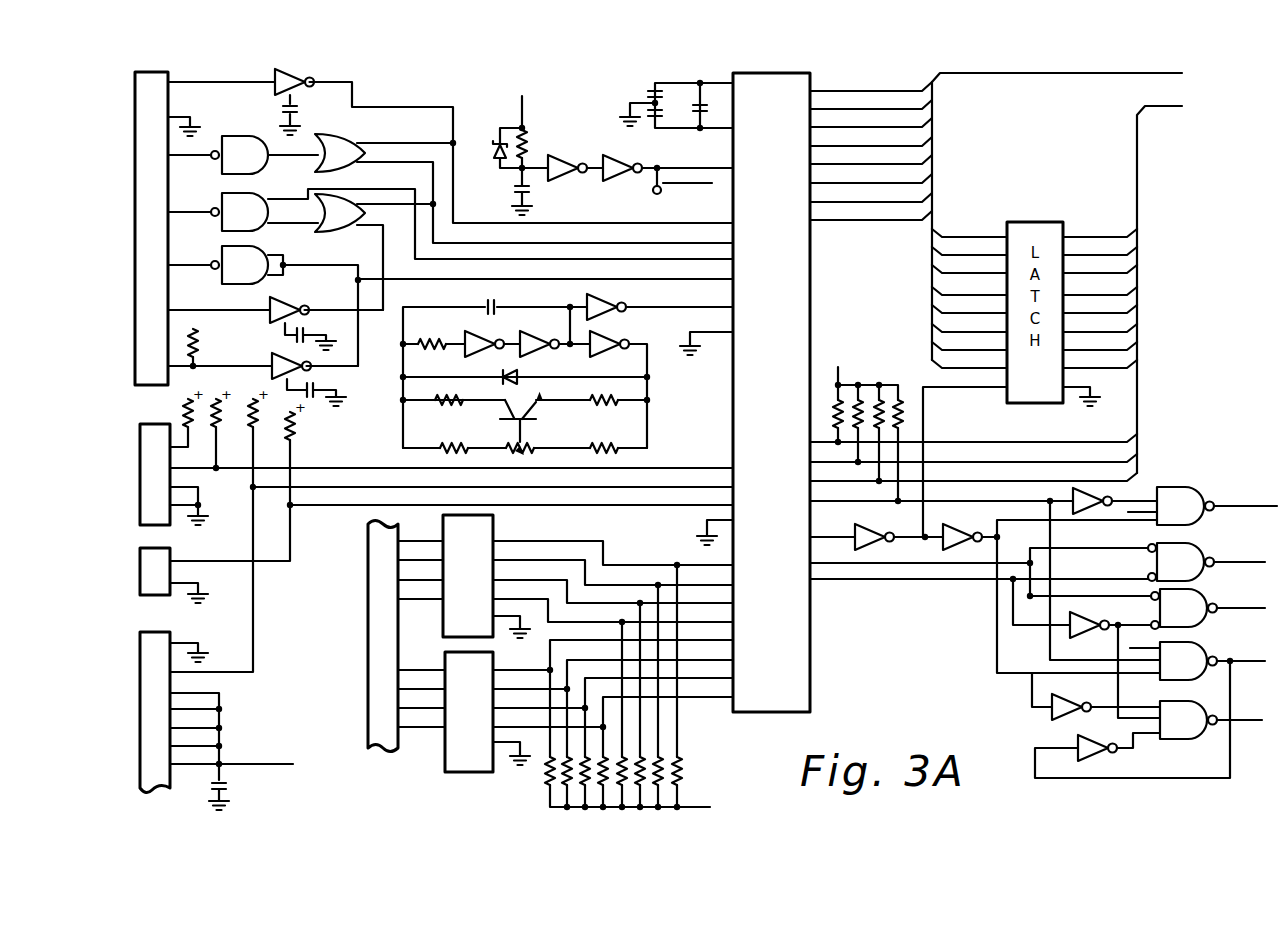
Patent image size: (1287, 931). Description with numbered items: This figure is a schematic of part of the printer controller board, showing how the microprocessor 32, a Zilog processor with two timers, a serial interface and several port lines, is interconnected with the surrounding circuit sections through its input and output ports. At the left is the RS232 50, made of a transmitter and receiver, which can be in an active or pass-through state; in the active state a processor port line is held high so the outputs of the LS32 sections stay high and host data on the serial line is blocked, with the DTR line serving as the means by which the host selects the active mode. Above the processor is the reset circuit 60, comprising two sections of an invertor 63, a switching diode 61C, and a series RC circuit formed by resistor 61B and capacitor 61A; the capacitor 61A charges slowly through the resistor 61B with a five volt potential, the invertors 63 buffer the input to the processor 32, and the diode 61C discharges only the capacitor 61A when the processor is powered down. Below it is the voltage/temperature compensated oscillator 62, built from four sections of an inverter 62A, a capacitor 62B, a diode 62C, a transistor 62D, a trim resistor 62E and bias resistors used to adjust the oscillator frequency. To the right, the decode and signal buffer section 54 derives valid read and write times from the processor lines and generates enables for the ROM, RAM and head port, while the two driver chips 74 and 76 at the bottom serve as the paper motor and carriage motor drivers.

The RS232 50 is at (393, 82).
The reset circuit 60 is at (588, 138).
The capacitor 61A is at (530, 189).
The resistor 61B is at (525, 140).
The switching diode 61C is at (497, 148).
The invertor 63 is at (622, 183).
The voltage/temperature compensated oscillator 62 is at (390, 387).
The inverter 62A is at (521, 340).
The capacitor 62B is at (496, 300).
The diode 62C is at (519, 382).
The transistor 62D is at (540, 418).
The trim resistor 62E is at (514, 443).
The microprocessor 32 is at (803, 313).
The decode and signal buffer section 54 is at (1199, 468).
The ULN2003A chip 74 is at (485, 533).
The ULN2003A chip 76 is at (455, 748).